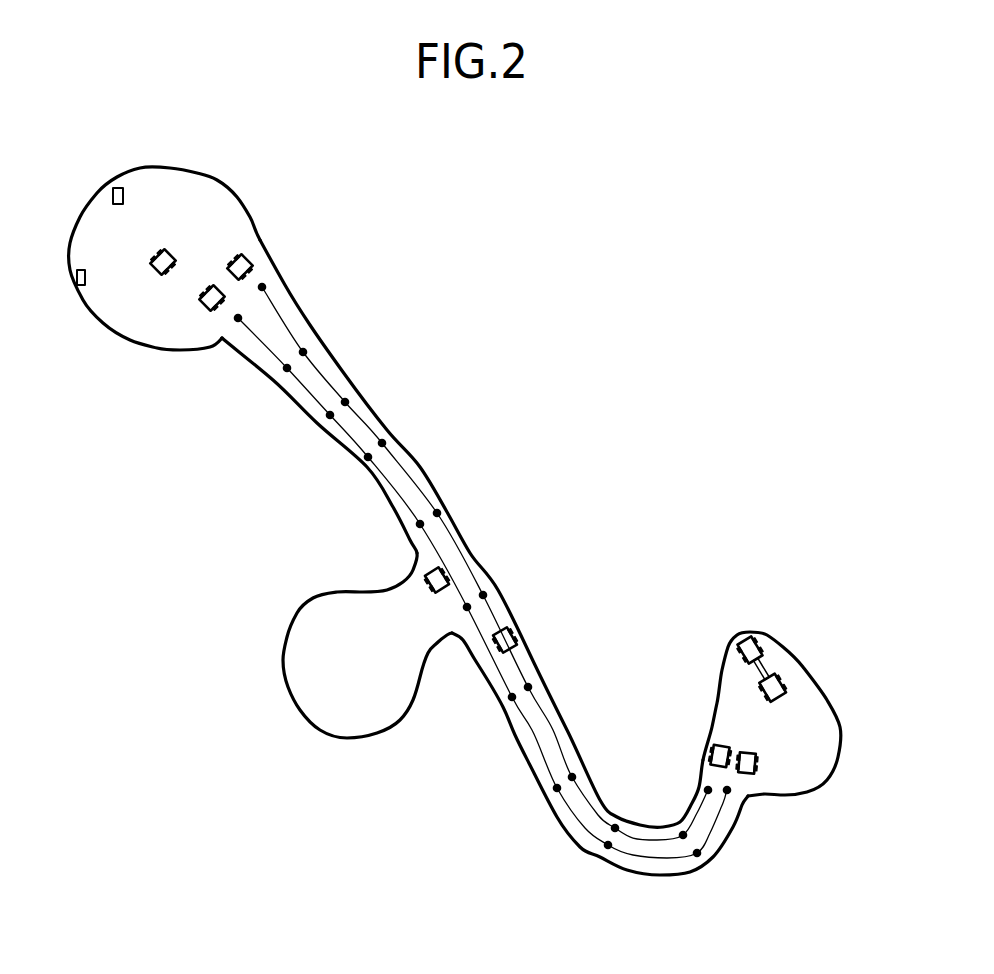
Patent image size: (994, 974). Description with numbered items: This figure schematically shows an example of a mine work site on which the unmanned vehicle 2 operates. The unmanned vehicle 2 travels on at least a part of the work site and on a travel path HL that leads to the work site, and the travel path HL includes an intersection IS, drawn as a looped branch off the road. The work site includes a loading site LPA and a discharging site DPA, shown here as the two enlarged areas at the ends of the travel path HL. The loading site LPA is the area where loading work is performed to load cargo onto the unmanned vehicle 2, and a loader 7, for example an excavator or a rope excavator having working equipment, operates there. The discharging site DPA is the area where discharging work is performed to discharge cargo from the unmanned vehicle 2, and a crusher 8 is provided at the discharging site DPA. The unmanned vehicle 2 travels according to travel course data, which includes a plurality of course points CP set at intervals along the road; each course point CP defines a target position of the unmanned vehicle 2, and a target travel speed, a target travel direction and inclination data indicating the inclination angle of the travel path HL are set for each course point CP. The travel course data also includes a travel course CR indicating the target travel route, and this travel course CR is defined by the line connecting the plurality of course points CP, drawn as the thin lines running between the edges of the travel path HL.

The unmanned vehicle 2 is at (238, 256).
The loader 7 is at (747, 638).
The crusher 8 is at (116, 187).
The course point CP is at (330, 415).
The travel course CR is at (553, 730).
The intersection IS is at (452, 640).
The travel path HL is at (566, 834).
The discharging site DPA is at (198, 238).
The loading site LPA is at (822, 741).